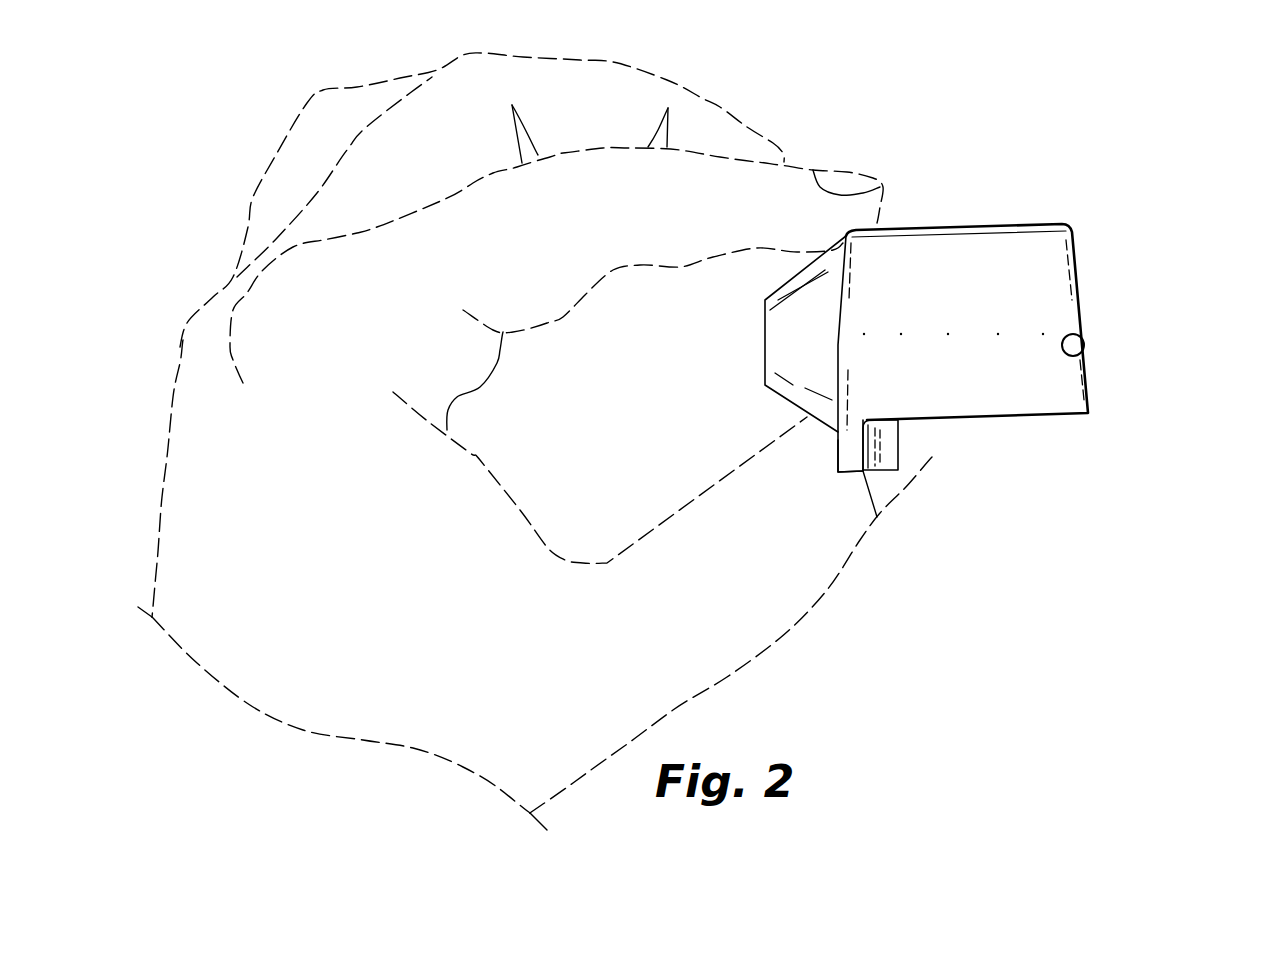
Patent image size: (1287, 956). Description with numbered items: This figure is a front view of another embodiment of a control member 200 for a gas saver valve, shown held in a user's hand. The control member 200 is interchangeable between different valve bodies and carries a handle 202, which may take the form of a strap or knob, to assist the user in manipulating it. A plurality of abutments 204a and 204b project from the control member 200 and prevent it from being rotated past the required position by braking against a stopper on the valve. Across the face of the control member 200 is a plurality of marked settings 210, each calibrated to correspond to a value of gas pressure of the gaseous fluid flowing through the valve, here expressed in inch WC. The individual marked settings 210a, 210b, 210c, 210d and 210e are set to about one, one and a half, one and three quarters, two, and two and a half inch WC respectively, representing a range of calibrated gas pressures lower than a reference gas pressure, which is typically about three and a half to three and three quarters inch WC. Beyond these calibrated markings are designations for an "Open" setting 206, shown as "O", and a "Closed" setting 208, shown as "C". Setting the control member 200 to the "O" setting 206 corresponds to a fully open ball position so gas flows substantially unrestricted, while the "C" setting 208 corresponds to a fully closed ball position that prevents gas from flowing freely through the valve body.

The control member 200 is at (1082, 118).
The handle 202 is at (807, 278).
The abutment 204a is at (850, 469).
The abutment 204b is at (900, 443).
The "Open" setting 206 is at (1084, 342).
The "Closed" setting 208 is at (833, 332).
The plurality of marked settings 210 is at (895, 226).
The marked setting 210a is at (860, 317).
The marked setting 210b is at (895, 317).
The marked setting 210c is at (948, 307).
The marked setting 210d is at (998, 310).
The marked setting 210e is at (1043, 310).